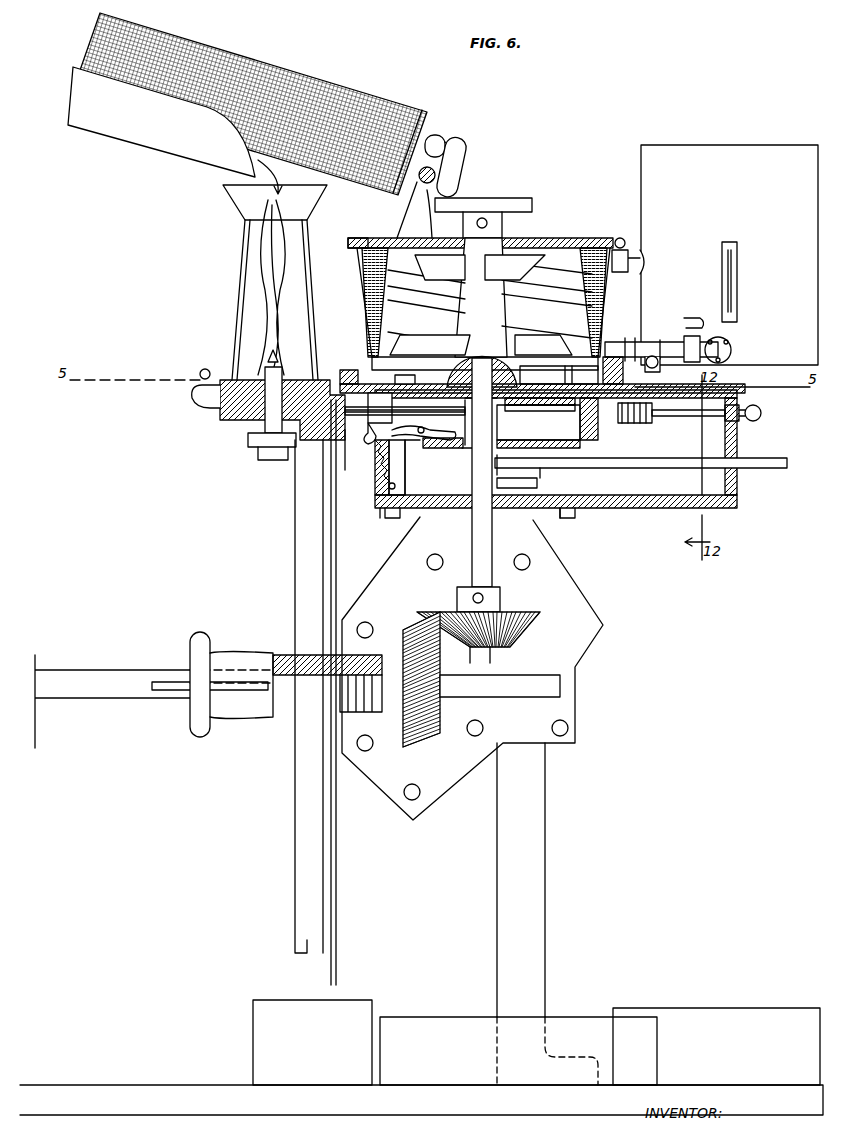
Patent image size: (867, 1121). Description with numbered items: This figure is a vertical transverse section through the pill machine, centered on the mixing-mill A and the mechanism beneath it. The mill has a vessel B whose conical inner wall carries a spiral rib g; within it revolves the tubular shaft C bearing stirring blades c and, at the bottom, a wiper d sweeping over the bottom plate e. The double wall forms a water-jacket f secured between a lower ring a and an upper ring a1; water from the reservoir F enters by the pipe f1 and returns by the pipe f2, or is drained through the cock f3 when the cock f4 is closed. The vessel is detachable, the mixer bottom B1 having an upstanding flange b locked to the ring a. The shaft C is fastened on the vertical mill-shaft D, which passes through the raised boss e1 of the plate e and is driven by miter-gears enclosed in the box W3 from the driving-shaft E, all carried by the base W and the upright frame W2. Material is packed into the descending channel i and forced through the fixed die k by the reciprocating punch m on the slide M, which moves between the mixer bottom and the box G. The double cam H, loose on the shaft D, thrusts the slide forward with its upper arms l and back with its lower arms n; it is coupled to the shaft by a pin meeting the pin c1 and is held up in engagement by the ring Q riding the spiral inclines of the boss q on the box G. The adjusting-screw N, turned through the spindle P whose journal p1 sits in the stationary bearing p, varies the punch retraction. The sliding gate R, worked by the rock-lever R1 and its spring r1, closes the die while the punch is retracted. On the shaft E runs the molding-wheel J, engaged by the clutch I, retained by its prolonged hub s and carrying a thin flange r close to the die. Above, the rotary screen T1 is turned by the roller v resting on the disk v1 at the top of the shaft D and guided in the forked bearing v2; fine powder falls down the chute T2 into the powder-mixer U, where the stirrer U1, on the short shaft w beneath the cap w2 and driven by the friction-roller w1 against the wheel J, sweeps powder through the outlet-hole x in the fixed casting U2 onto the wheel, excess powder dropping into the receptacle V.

The rotary screen T1 is at (249, 104).
The chute T2 is at (182, 156).
The wheel or roller v is at (462, 145).
The forked bearing v2 is at (440, 133).
The disk v1 is at (483, 208).
The mixing-mill A is at (480, 295).
The upper ring a1 is at (359, 232).
The bottom ring a is at (347, 365).
The water-jacket f is at (364, 290).
The tubular shaft C is at (481, 297).
The vessel or shell B is at (487, 303).
The spiral rib g is at (422, 294).
The stirring arms or blades c is at (481, 306).
The pin c1 is at (482, 380).
The wiper d is at (559, 376).
The powder-mixer U is at (271, 282).
The stirrer U1 is at (258, 322).
The fixed casting U2 is at (222, 400).
The outlet-hole x is at (282, 410).
The short shaft w is at (270, 406).
The cap w2 is at (285, 351).
The friction-roller w1 is at (252, 448).
The reservoir F is at (729, 255).
The pipe f1 is at (628, 271).
The pipe f2 is at (668, 341).
The cock f3 is at (660, 370).
The cock f4 is at (694, 331).
The bottom of the mixer B1 is at (620, 372).
The box G is at (556, 458).
The slide M is at (547, 423).
The bottom plate e is at (540, 410).
The raised boss e1 is at (540, 416).
The upper cam-arms l is at (487, 421).
The adjusting-screw N is at (634, 424).
The adjusting-spindle P is at (694, 418).
The stationary bearing p is at (740, 420).
The journal p1 is at (758, 413).
The ring Q is at (774, 470).
The lower cam-arms n is at (524, 467).
The raised boss q is at (517, 487).
The double cam H is at (432, 467).
The channel i is at (380, 408).
The reciprocating punch m is at (405, 403).
The annular flange b is at (405, 373).
The sliding gate R is at (370, 445).
The spring r1 is at (382, 464).
The rock-lever R1 is at (410, 438).
The fixed die k is at (350, 450).
The vertical mill-shaft D is at (486, 535).
The gear box W3 is at (472, 664).
The prolonged hub s is at (327, 675).
The driving-shaft E is at (152, 701).
The clutch I is at (231, 684).
The molding-wheel J is at (309, 696).
The projecting flange r is at (340, 692).
The upright frame W2 is at (547, 914).
The receptacle V is at (312, 1042).
The base W is at (421, 1061).